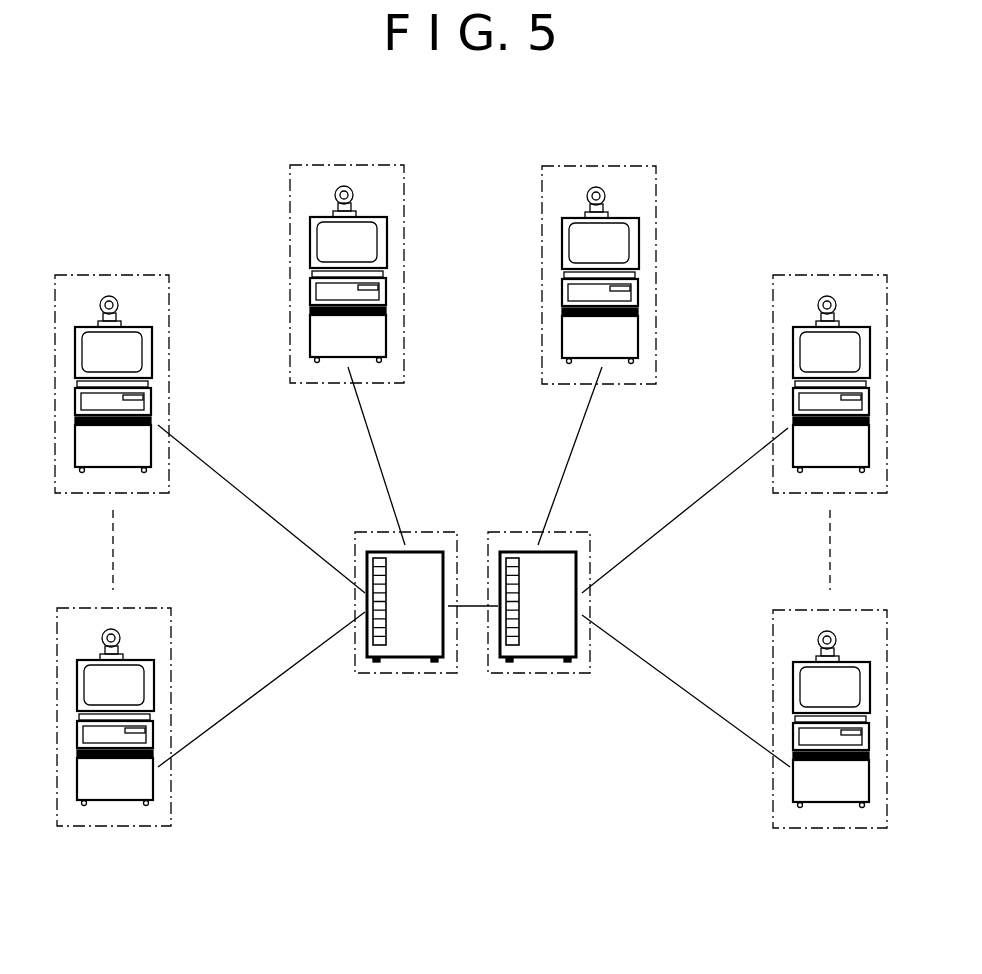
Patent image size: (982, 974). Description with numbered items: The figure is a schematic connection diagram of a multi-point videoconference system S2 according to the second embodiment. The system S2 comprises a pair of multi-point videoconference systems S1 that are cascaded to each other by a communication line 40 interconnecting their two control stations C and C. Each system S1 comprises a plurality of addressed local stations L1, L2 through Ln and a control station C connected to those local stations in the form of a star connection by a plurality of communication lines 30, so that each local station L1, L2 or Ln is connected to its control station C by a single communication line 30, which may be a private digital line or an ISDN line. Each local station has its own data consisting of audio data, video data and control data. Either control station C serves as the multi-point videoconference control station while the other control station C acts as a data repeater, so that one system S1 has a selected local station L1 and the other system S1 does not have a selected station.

The local station L1 is at (405, 260).
The local station L2 is at (168, 377).
The local station Ln is at (142, 608).
The communication line 30 is at (273, 520).
The communication line 40 is at (473, 606).
The control station C is at (408, 532).
The multi-point videoconference system S1 is at (473, 639).
The multi-point videoconference system S2 is at (473, 659).